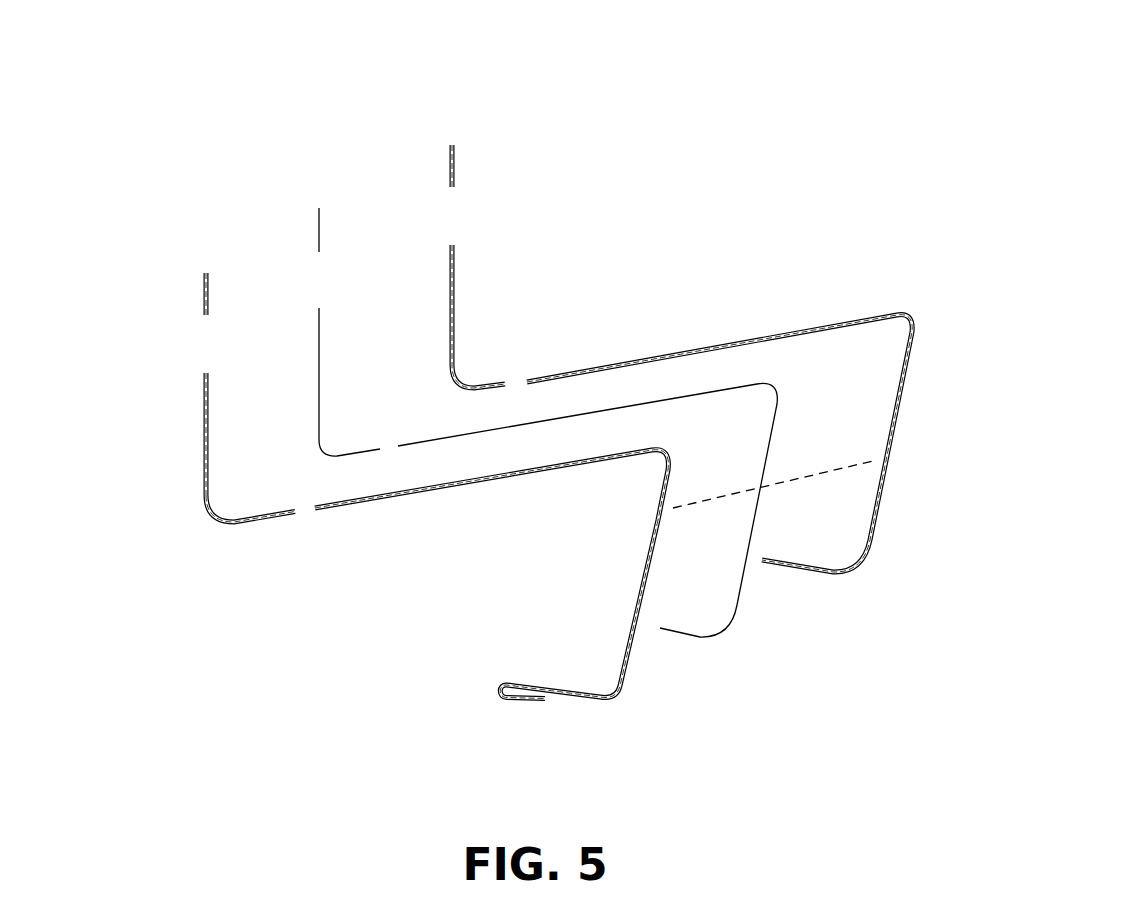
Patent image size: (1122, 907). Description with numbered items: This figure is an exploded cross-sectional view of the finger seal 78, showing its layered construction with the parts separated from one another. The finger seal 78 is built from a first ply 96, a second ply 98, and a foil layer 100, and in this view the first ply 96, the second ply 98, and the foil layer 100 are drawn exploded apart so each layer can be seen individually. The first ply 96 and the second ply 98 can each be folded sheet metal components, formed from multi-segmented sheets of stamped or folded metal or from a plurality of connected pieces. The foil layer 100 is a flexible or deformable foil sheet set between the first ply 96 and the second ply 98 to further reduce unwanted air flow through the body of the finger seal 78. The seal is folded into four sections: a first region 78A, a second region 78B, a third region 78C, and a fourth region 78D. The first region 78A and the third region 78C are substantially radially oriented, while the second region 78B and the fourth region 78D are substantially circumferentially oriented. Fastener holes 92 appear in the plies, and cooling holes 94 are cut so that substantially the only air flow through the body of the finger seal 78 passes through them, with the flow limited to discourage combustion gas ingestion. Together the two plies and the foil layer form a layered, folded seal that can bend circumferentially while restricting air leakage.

The finger seal 78 is at (486, 409).
The first region 78A is at (177, 422).
The second region 78B is at (403, 522).
The third region 78C is at (625, 604).
The fourth region 78D is at (554, 722).
The fastener holes 92 is at (208, 340).
The cooling holes 94 is at (302, 514).
The first ply 96 is at (208, 460).
The second ply 98 is at (453, 327).
The foil layer 100 is at (320, 391).